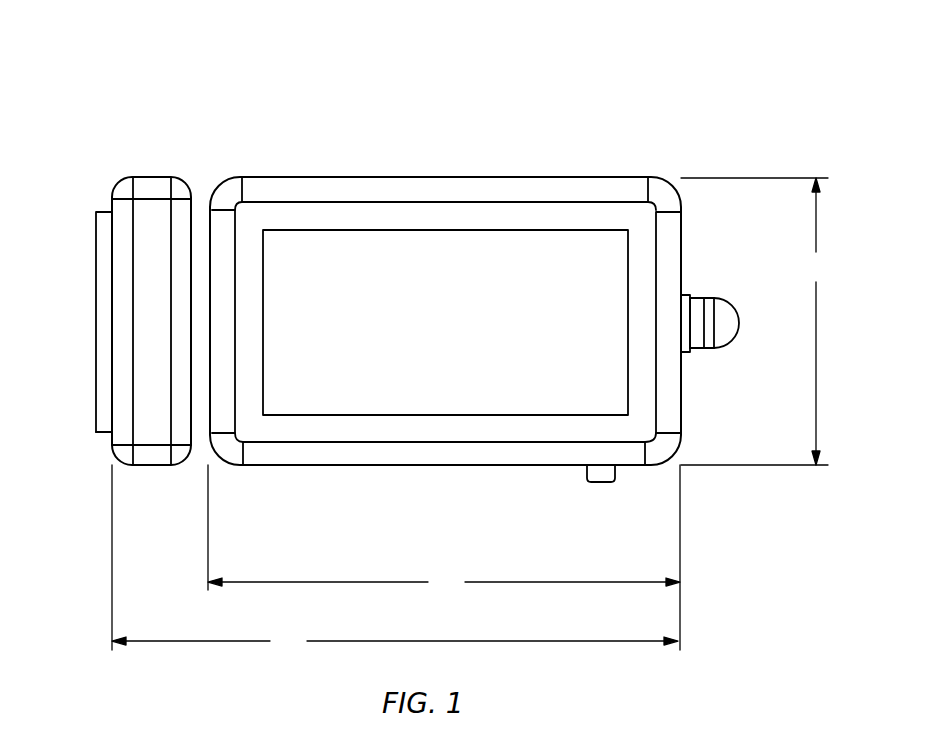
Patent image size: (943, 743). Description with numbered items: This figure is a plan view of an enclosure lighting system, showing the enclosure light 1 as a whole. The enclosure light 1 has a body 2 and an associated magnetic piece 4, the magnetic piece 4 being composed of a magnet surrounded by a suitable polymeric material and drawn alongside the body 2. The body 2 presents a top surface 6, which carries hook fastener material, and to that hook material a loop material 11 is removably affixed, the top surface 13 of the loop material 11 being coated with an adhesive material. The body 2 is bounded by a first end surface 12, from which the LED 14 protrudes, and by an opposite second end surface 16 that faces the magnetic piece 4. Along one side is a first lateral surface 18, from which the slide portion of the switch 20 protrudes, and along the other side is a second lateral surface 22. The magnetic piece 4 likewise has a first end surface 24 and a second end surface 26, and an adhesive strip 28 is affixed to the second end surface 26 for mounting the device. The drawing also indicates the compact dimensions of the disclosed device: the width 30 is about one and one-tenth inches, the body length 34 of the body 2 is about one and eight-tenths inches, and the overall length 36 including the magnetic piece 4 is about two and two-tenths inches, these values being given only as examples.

The enclosure light 1 is at (760, 31).
The body 2 is at (474, 313).
The magnetic piece 4 is at (155, 308).
The top surface 6 is at (307, 215).
The loop material 11 is at (342, 385).
The first end surface 12 is at (683, 258).
The top surface 13 is at (474, 326).
The LED 14 is at (722, 315).
The second end surface 16 is at (208, 222).
The first lateral surface 18 is at (420, 467).
The switch 20 is at (600, 473).
The second lateral surface 22 is at (557, 177).
The first end surface 24 is at (192, 438).
The second end surface 26 is at (110, 442).
The adhesive strip 28 is at (79, 316).
The width 30 is at (755, 321).
The body length 34 is at (444, 557).
The overall length 36 is at (395, 559).